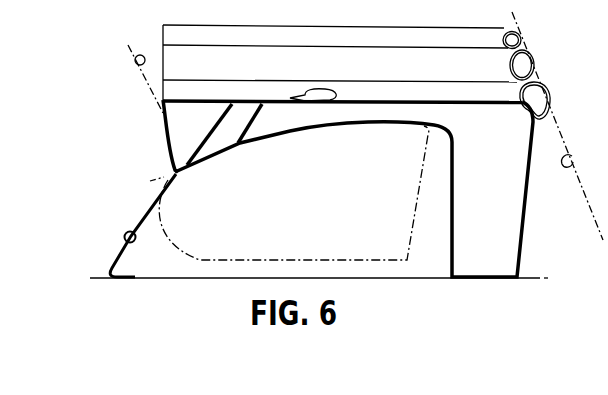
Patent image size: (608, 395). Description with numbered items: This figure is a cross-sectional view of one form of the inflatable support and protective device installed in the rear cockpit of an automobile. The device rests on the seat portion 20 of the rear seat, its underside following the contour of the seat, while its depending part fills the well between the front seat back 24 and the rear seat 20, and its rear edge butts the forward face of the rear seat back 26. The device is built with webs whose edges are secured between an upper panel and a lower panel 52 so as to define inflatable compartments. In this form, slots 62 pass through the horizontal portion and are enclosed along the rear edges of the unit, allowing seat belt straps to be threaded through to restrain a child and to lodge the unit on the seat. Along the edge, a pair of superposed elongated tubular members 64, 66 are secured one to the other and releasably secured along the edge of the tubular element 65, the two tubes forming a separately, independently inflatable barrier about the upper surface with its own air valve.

The seat portion 20 is at (425, 193).
The front seat back 24 is at (573, 160).
The rear seat back 26 is at (136, 66).
The lower panel 52 is at (332, 0).
The slots 62 is at (234, 101).
The tubular member 64 is at (528, 62).
The tubular element 65 is at (540, 96).
The tubular member 66 is at (518, 37).